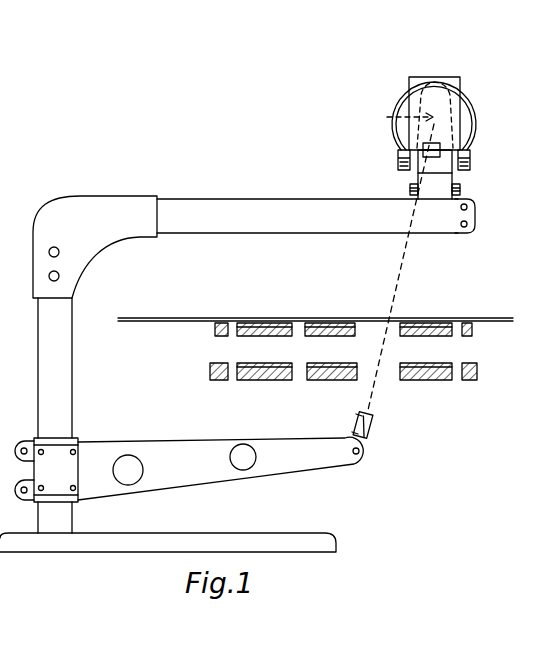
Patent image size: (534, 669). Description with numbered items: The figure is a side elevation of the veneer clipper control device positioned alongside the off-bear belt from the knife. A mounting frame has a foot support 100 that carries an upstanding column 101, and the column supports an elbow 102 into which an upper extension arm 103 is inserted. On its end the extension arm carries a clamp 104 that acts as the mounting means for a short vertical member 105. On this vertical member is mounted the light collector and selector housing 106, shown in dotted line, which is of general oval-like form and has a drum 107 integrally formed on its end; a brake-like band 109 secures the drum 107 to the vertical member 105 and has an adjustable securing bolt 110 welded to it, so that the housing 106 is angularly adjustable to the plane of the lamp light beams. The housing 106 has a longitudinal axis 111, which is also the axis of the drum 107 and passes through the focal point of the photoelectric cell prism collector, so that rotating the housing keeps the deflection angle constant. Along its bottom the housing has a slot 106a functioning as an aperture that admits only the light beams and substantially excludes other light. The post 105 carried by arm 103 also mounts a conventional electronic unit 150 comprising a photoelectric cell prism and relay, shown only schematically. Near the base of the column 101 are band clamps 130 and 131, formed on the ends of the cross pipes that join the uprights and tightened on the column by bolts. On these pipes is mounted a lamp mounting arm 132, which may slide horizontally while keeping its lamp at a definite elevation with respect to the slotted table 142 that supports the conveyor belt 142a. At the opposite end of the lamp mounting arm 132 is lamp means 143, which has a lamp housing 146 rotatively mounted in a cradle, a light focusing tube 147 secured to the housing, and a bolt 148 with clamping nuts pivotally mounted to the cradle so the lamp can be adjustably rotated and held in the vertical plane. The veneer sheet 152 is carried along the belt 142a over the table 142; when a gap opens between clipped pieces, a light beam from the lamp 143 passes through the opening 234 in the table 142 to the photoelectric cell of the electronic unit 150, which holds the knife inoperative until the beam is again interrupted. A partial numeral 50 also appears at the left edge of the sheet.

The foot support 100 is at (48, 545).
The upstanding column 101 is at (72, 374).
The elbow 102 is at (100, 247).
The upper extension arm 103 is at (229, 204).
The clamp 104 is at (485, 212).
The short vertical member 105 is at (456, 184).
The light collector and selector housing 106 is at (421, 90).
The slot 106a is at (412, 158).
The drum 107 is at (466, 102).
The brake-like band 109 is at (472, 115).
The adjustable securing bolt 110 is at (472, 136).
The longitudinal axis 111 is at (397, 119).
The band clamp 130 is at (58, 441).
The band clamp 131 is at (62, 500).
The lamp mounting arm 132 is at (205, 488).
The slotted table 142 is at (243, 340).
The conveyor belt 142a is at (280, 338).
The lamp means 143 is at (384, 427).
The lamp housing 146 is at (358, 432).
The light focusing tube 147 is at (364, 414).
The bolt 148 is at (360, 452).
The electronic unit 150 is at (452, 80).
The veneer sheet 152 is at (178, 316).
The opening 234 is at (394, 372).
The partial label 50 is at (7, 119).